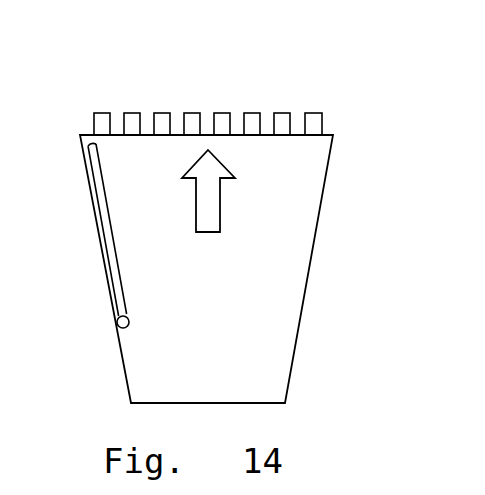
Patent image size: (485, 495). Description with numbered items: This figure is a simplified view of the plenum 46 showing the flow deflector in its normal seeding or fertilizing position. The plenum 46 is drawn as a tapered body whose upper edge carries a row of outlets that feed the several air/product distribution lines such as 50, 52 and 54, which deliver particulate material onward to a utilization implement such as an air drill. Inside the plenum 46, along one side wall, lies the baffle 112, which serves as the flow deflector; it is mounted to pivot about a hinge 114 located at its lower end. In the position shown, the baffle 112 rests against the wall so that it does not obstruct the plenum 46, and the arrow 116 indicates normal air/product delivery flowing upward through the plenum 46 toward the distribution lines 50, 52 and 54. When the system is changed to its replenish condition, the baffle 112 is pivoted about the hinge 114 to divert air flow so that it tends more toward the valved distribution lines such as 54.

The plenum 46 is at (292, 367).
The air/product distribution line 50 is at (97, 122).
The air/product distribution line 52 is at (135, 120).
The air/product distribution line 54 is at (317, 115).
The baffle 112 is at (103, 212).
The hinge 114 is at (129, 325).
The arrow 116 is at (215, 203).